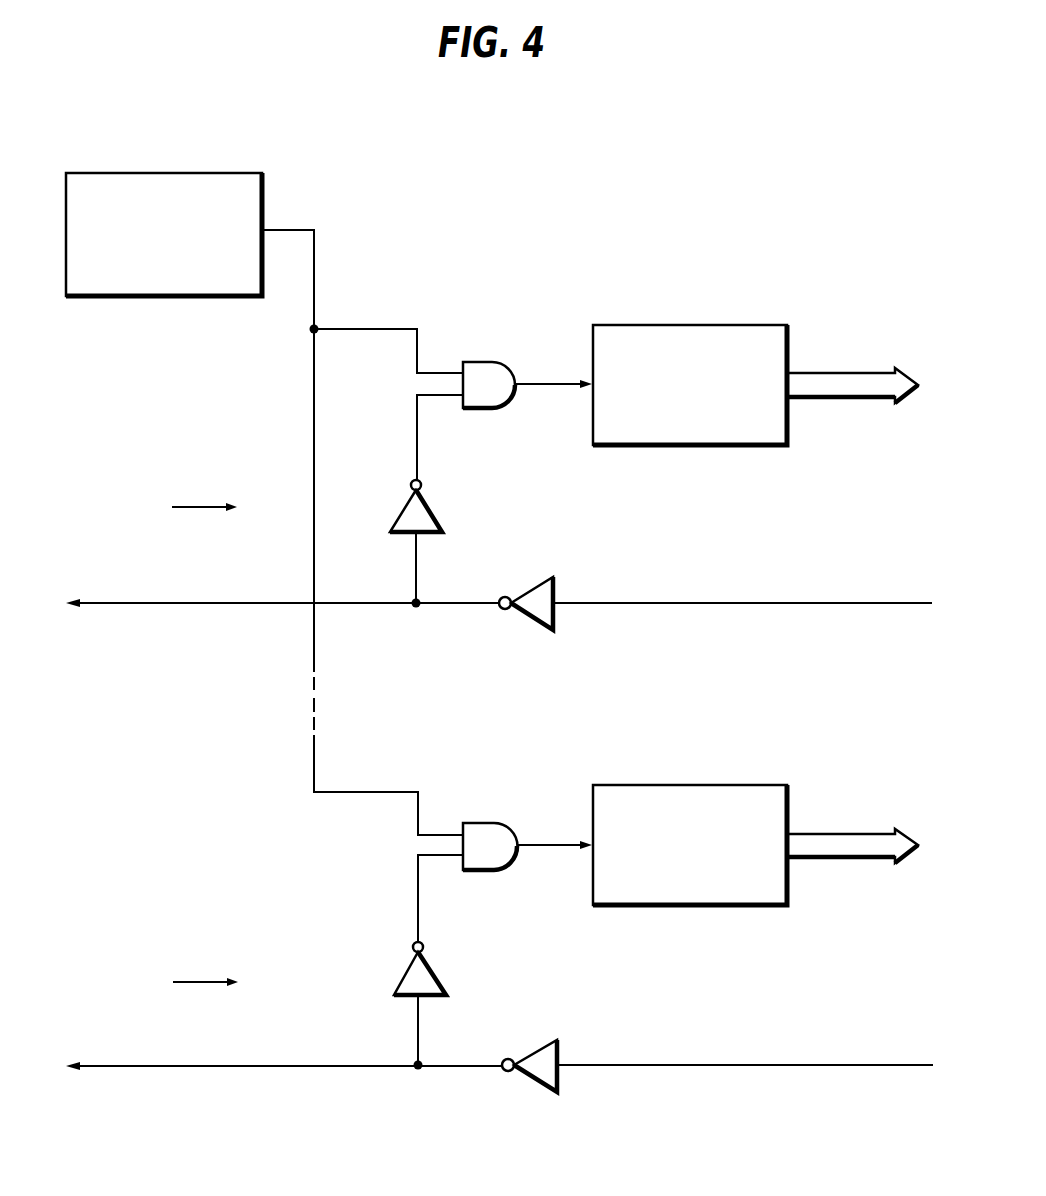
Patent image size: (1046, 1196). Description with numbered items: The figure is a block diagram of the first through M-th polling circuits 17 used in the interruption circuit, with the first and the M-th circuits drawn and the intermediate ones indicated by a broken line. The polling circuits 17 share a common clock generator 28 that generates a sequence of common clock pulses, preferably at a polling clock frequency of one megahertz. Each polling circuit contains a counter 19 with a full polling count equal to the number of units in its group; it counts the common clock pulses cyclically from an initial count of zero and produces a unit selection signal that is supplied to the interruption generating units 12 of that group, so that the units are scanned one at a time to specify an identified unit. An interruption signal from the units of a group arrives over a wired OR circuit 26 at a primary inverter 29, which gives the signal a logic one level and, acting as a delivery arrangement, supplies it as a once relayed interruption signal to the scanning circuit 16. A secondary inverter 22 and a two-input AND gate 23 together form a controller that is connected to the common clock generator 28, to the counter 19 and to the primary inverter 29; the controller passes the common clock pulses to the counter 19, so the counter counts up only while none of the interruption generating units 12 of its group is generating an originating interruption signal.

The common clock generator 28 is at (262, 194).
The two-input AND gate 23 is at (486, 362).
The counter 19 is at (684, 325).
The interruption generating units 12 is at (868, 616).
The secondary inverter 22 is at (437, 505).
The primary inverter 29 is at (524, 588).
The wired OR circuit 26 is at (743, 817).
The scanning circuit 16 is at (284, 856).
The polling circuits 17 is at (170, 743).